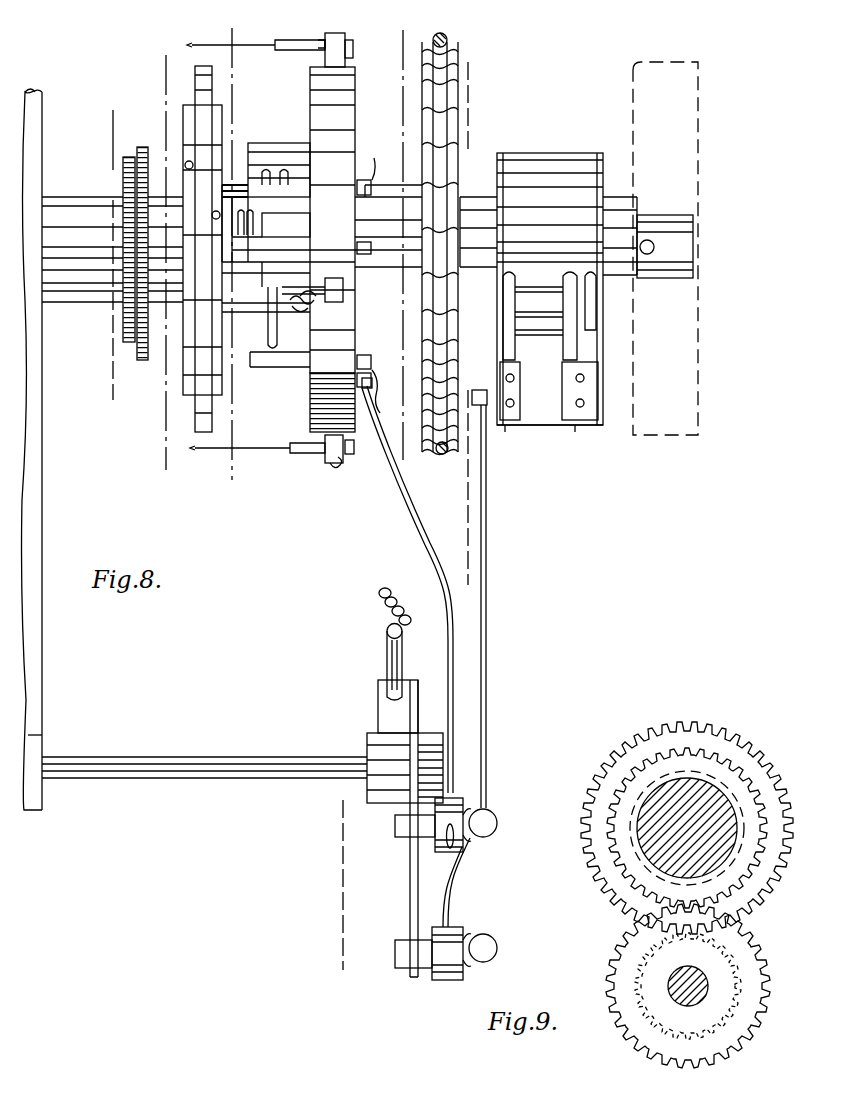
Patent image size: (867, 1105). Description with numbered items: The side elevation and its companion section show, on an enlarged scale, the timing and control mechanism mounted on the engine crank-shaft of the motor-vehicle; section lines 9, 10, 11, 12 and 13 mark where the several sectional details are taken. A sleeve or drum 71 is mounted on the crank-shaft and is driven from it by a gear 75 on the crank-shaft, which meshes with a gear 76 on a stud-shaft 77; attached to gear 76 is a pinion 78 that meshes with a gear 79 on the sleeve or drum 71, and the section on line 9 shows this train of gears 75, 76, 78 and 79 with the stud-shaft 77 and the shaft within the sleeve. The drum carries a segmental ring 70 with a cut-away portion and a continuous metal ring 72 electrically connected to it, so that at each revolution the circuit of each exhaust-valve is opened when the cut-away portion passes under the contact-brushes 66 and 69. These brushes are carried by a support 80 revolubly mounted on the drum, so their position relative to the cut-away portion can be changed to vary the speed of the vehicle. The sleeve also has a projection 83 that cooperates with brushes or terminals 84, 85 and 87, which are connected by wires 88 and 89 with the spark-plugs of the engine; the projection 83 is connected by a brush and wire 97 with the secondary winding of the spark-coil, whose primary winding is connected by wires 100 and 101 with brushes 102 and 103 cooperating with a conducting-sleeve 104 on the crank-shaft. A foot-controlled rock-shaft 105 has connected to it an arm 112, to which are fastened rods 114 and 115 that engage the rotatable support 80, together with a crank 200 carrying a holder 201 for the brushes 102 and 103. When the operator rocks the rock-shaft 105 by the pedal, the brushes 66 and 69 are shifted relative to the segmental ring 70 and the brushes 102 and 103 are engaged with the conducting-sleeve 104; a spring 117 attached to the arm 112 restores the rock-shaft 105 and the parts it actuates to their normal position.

In FIG. 8, the section line 9 is at (70, 313).
In FIG. 9, the section line 9 is at (642, 820).
In FIG. 8, the section line 10 is at (160, 267).
In FIG. 8, the section line 11 is at (233, 252).
In FIG. 8, the section line 12 is at (409, 520).
In FIG. 8, the section line 13 is at (408, 244).
In FIG. 8, the contact-brush 66 is at (266, 170).
In FIG. 8, the contact-brush 69 is at (262, 268).
In FIG. 8, the segmental ring 70 is at (235, 185).
In FIG. 9, the sleeve or drum 71 is at (650, 780).
In FIG. 8, the continuous metal ring 72 is at (270, 217).
In FIG. 8, the gear 75 is at (125, 347).
In FIG. 9, the gear 75 is at (612, 845).
In FIG. 9, the gear 76 is at (610, 968).
In FIG. 9, the stud-shaft 77 is at (682, 972).
In FIG. 9, the pinion 78 is at (636, 998).
In FIG. 8, the gear 79 is at (144, 360).
In FIG. 9, the gear 79 is at (595, 872).
In FIG. 8, the support 80 is at (355, 95).
In FIG. 8, the projection 83 is at (190, 155).
In FIG. 8, the brush or terminal 84 is at (318, 280).
In FIG. 8, the brush or terminal 85 is at (256, 33).
In FIG. 8, the brush or terminal 87 is at (270, 448).
In FIG. 8, the wire 88 is at (318, 306).
In FIG. 8, the wire 89 is at (322, 58).
In FIG. 8, the wire 97 is at (334, 466).
In FIG. 8, the wire 100 is at (578, 428).
In FIG. 8, the wire 101 is at (507, 428).
In FIG. 8, the brush 102 is at (590, 386).
In FIG. 8, the brush 103 is at (520, 396).
In FIG. 8, the conducting-sleeve 104 is at (540, 336).
In FIG. 8, the rock-shaft 105 is at (168, 778).
In FIG. 8, the arm 112 is at (410, 876).
In FIG. 8, the rod 114 is at (415, 540).
In FIG. 8, the rod 115 is at (488, 564).
In FIG. 8, the spring 117 is at (385, 586).
In FIG. 8, the crank 200 is at (494, 362).
In FIG. 8, the holder 201 is at (548, 425).